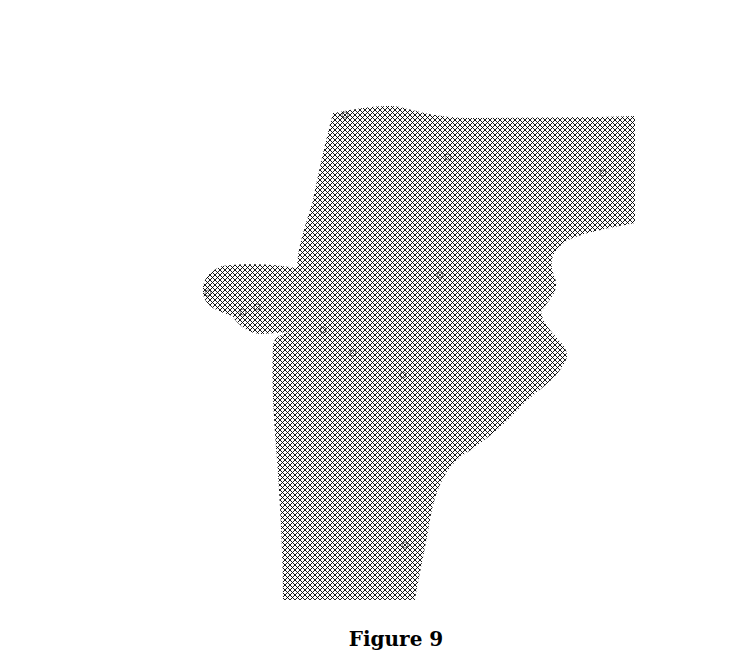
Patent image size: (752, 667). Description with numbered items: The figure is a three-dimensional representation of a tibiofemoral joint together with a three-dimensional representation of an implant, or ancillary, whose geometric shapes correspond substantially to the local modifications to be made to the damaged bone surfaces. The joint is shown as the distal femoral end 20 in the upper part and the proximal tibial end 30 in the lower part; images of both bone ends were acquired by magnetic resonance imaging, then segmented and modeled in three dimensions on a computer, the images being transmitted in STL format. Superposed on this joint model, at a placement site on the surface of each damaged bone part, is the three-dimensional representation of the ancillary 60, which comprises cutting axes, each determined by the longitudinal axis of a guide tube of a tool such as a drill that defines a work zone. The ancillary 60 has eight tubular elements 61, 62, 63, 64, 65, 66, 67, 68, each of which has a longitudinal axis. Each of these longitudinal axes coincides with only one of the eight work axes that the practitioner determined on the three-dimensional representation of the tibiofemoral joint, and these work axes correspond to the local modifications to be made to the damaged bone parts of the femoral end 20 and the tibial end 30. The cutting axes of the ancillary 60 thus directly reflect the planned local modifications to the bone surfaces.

The distal femoral end 20 is at (606, 173).
The proximal tibial end 30 is at (408, 545).
The ancillary 60 is at (442, 276).
The tubular element 61 is at (346, 113).
The tubular element 62 is at (449, 155).
The tubular element 63 is at (206, 292).
The tubular element 64 is at (256, 305).
The tubular element 65 is at (241, 313).
The tubular element 66 is at (321, 331).
The tubular element 67 is at (351, 354).
The tubular element 68 is at (401, 376).